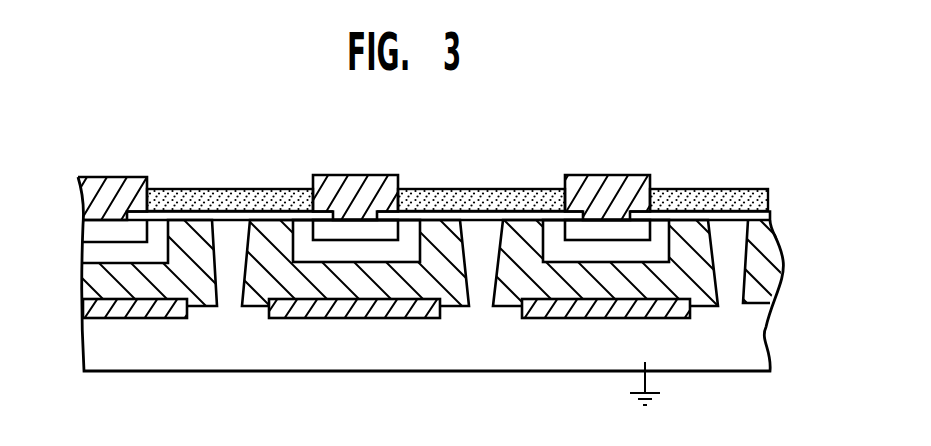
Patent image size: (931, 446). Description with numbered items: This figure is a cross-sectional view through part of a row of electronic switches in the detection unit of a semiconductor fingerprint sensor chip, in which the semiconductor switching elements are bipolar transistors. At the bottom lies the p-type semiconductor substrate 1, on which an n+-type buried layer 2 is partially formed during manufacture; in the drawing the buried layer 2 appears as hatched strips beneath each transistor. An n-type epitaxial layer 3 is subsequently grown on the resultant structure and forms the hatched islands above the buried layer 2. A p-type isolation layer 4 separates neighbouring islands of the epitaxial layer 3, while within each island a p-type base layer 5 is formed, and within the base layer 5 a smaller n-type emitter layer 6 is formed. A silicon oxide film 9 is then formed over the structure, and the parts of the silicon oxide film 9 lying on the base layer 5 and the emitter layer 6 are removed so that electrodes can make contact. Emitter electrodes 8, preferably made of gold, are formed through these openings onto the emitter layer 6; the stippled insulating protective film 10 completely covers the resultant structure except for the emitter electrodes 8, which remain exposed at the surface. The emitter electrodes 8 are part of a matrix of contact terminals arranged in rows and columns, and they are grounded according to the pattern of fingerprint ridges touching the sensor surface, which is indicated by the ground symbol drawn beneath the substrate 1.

The p-type semiconductor substrate 1 is at (430, 274).
The n+-type buried layer 2 is at (583, 310).
The n-type epitaxial layer 3 is at (647, 283).
The p-type isolation layer 4 is at (490, 227).
The p-type base layer 5 is at (410, 230).
The n-type emitter layer 6 is at (363, 230).
The emitter electrode 8 is at (123, 182).
The silicon oxide film 9 is at (722, 215).
The insulating protective film 10 is at (683, 192).